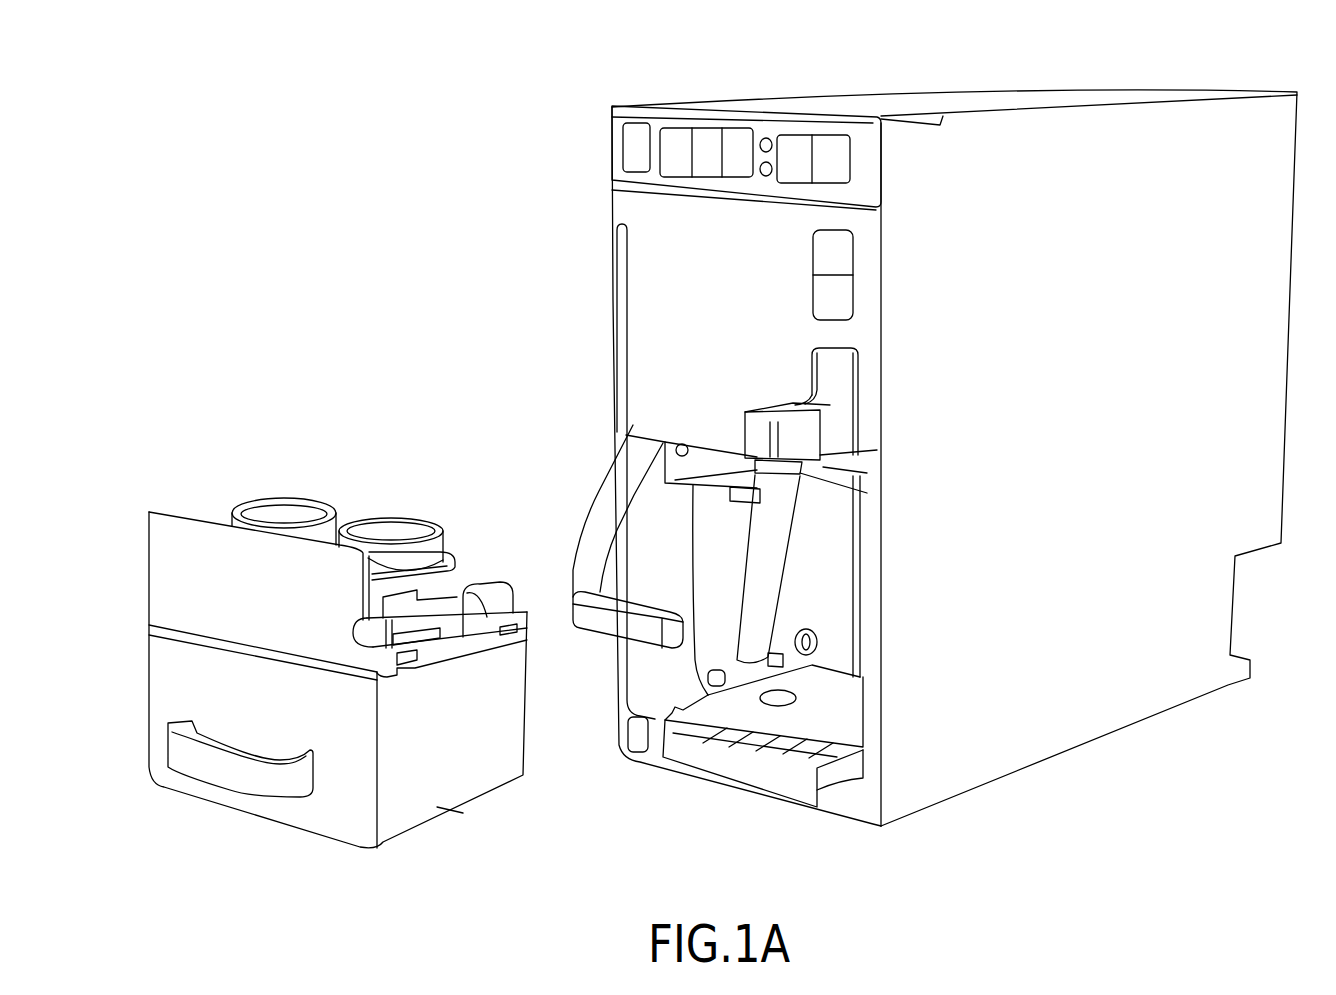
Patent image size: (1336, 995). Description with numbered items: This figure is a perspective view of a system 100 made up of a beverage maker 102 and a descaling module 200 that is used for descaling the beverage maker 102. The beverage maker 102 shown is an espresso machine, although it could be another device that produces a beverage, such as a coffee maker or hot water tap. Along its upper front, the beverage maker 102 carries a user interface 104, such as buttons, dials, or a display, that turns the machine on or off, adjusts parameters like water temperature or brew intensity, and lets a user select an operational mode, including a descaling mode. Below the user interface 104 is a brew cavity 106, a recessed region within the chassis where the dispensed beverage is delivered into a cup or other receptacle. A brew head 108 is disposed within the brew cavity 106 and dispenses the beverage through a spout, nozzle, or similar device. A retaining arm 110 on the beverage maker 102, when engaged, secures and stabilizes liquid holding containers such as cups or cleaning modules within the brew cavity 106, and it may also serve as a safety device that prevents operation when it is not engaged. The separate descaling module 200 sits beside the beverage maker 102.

The system 100 is at (220, 88).
The beverage maker 102 is at (1118, 88).
The user interface 104 is at (604, 106).
The brew cavity 106 is at (707, 560).
The brew head 108 is at (752, 457).
The retaining arm 110 is at (595, 550).
The descaling module 200 is at (195, 500).